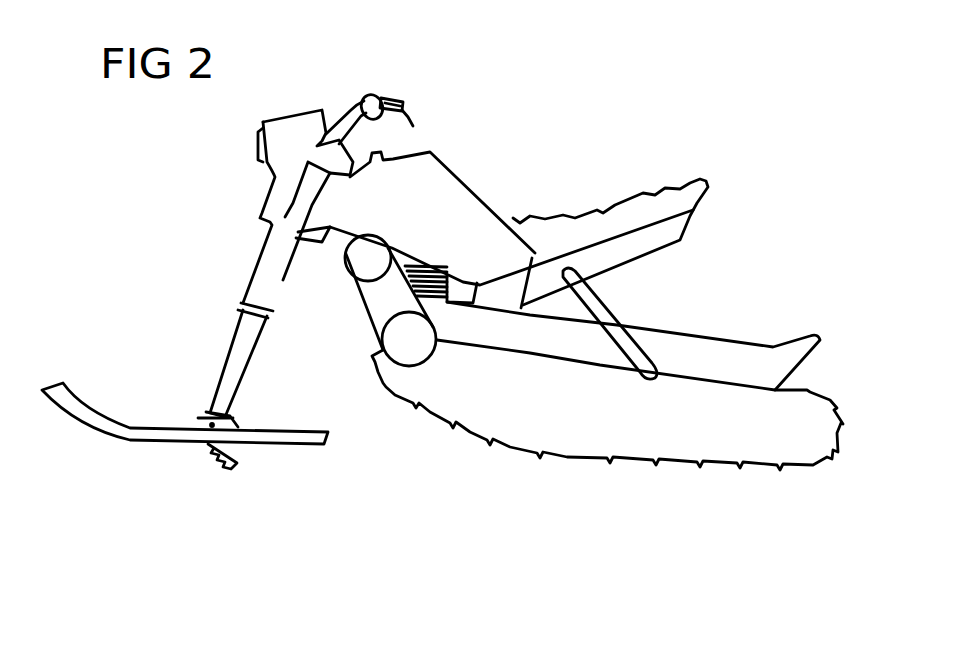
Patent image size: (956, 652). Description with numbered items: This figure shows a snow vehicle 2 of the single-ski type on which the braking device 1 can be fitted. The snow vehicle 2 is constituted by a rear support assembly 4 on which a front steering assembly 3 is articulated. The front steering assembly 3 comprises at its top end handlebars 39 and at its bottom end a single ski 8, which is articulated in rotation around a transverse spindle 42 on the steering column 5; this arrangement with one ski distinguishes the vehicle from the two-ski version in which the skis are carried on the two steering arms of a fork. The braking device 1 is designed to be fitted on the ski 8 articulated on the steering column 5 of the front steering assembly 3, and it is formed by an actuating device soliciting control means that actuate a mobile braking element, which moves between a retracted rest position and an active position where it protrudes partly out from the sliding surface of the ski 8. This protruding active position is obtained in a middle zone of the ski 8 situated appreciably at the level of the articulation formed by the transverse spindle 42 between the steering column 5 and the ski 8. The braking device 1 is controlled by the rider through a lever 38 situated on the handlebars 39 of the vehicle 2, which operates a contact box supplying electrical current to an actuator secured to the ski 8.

The braking device 1 is at (203, 483).
The snow vehicle 2 is at (598, 93).
The front steering assembly 3 is at (219, 283).
The rear support assembly 4 is at (550, 467).
The steering column 5 is at (252, 364).
The ski 8 is at (107, 437).
The lever 38 is at (408, 118).
The handlebars 39 is at (383, 96).
The transverse spindle 42 is at (205, 410).